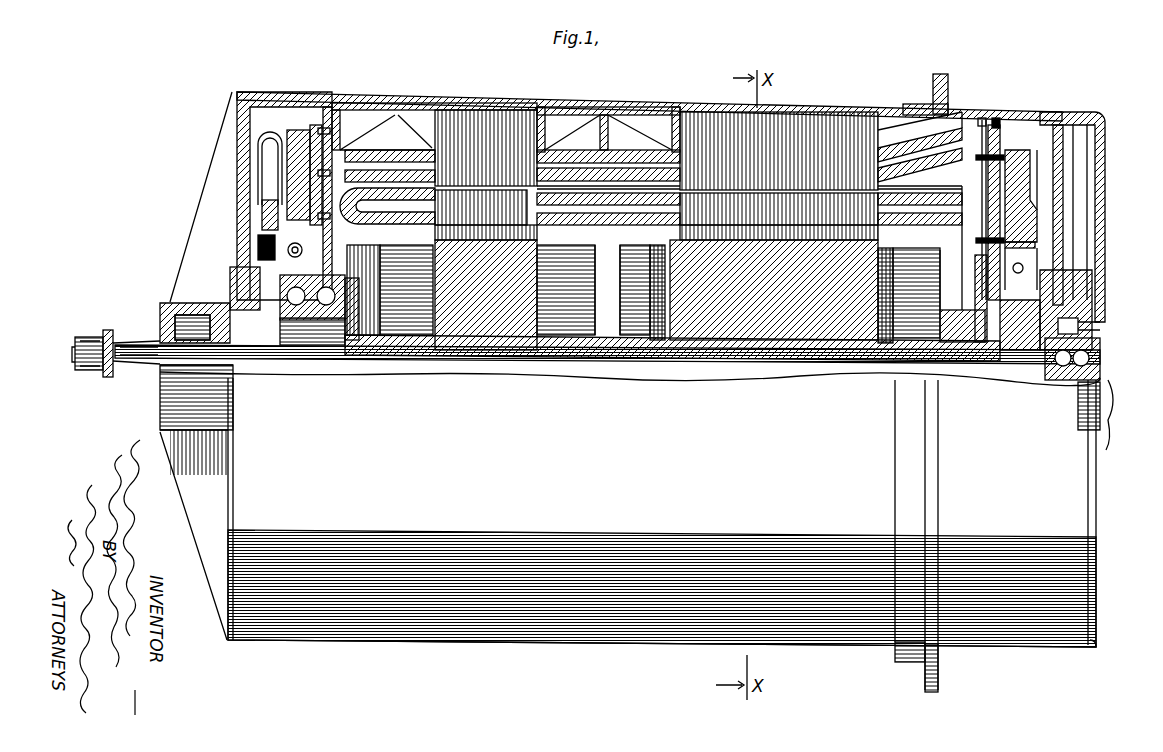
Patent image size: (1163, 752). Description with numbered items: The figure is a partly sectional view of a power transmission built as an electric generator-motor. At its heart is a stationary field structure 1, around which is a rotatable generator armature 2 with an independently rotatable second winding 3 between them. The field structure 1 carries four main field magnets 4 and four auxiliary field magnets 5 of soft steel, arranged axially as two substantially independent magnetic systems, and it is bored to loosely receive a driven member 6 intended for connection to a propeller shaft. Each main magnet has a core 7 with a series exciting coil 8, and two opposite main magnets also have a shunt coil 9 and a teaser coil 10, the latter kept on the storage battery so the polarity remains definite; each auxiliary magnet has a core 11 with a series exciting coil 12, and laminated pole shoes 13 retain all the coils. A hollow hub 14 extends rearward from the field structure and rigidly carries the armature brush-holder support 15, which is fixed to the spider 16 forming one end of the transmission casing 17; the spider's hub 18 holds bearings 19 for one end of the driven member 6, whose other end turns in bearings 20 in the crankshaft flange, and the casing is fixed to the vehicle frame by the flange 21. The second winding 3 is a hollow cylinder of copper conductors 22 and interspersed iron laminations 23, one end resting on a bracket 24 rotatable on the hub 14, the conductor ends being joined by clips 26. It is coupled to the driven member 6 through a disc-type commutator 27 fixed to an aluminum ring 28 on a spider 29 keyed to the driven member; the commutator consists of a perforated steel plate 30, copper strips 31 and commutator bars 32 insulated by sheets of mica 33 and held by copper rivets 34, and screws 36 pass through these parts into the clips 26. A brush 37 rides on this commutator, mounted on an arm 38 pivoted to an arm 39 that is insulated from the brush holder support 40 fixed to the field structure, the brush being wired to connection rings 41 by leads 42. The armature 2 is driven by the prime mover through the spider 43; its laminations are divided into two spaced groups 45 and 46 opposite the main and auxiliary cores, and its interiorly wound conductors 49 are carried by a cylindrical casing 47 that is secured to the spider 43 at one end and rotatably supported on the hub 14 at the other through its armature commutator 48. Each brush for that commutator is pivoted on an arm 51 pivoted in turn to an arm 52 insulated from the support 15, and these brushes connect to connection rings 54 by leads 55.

The stationary field structure 1 is at (608, 354).
The rotatable generator armature 2 is at (650, 106).
The independently rotatable second winding 3 is at (600, 226).
The main field magnets 4 is at (760, 357).
The auxiliary field magnets 5 is at (478, 355).
The driven member 6 is at (382, 373).
The core 7 is at (774, 290).
The series exciting coil 8 is at (624, 285).
The shunt coil 9 is at (656, 246).
The teaser coil 10 is at (660, 357).
The core 11 is at (486, 295).
The series exciting coil 12 is at (415, 318).
The pole shoes 13 is at (528, 235).
The hub 14 is at (325, 345).
The armature brush-holder support 15 is at (232, 270).
The spider 16 is at (250, 165).
The transmission casing 17 is at (592, 104).
The hub 18 is at (183, 303).
The bearings 19 is at (176, 327).
The bearings 20 is at (1075, 378).
The flange 21 is at (932, 80).
The copper conductors 22 is at (570, 227).
The iron laminations 23 is at (609, 206).
The bracket 24 is at (352, 330).
The clips 26 is at (962, 200).
The commutator 27 is at (1005, 135).
The aluminum ring 28 is at (1065, 128).
The spider 29 is at (1064, 165).
The perforated steel plate 30 is at (995, 118).
The copper strips 31 is at (985, 228).
The commutator bars 32 is at (1015, 223).
The sheets of mica 33 is at (1032, 180).
The copper rivets 34 is at (1035, 245).
The screws 36 is at (980, 128).
The brush 37 is at (1027, 150).
The arm 38 is at (1024, 266).
The arm 39 is at (1078, 286).
The brush holder support 40 is at (976, 295).
The connection rings 41 is at (1005, 365).
The leads 42 is at (1030, 320).
The spider 43 is at (1092, 305).
The group of laminations 45 is at (790, 128).
The group of laminations 46 is at (500, 114).
The cylindrical casing 47 is at (446, 104).
The armature commutator 48 is at (300, 130).
The conductors 49 is at (395, 135).
The arm 51 is at (258, 240).
The arm 52 is at (288, 252).
The connection rings 54 is at (262, 212).
The leads 55 is at (262, 145).